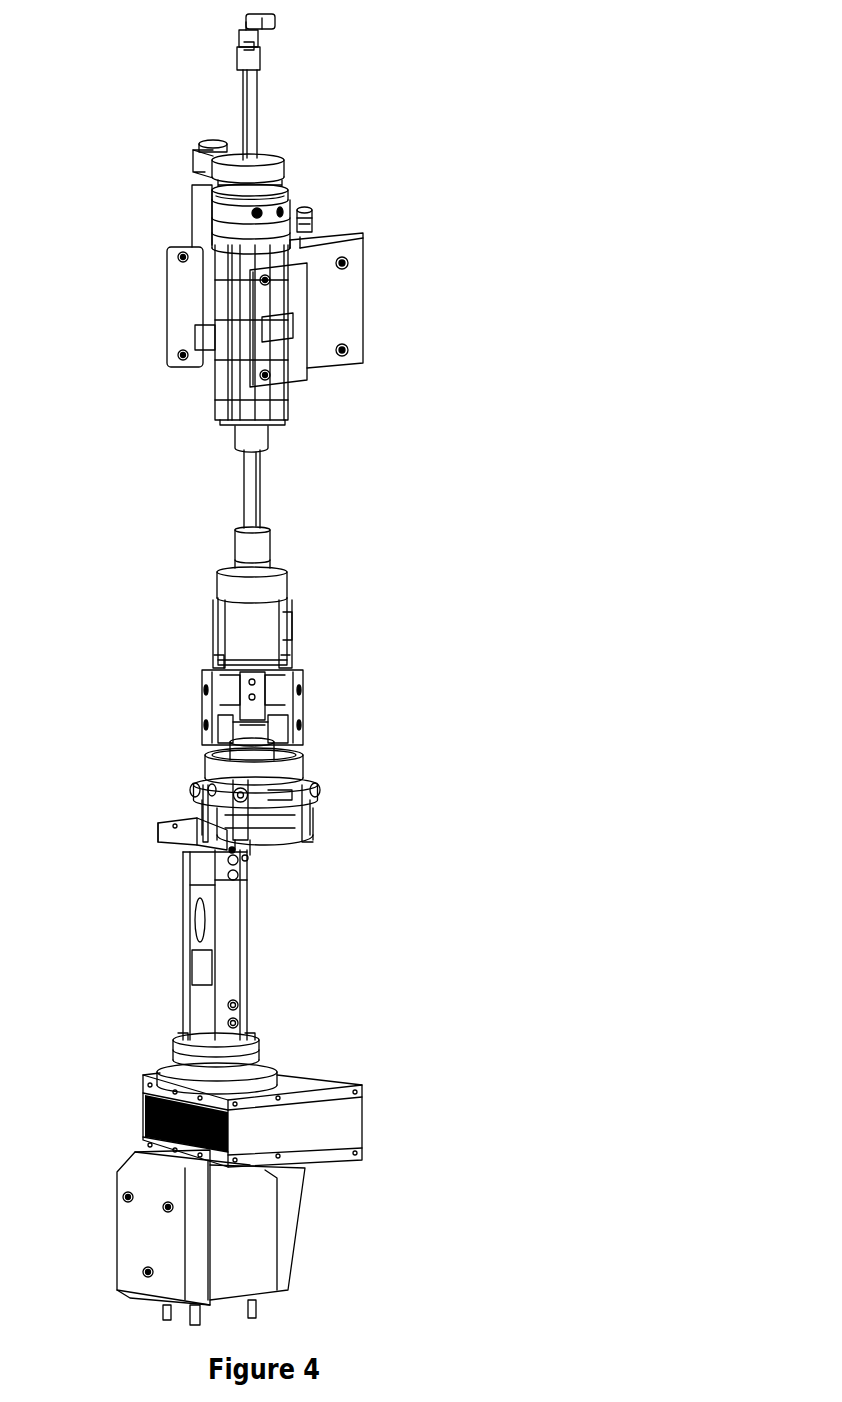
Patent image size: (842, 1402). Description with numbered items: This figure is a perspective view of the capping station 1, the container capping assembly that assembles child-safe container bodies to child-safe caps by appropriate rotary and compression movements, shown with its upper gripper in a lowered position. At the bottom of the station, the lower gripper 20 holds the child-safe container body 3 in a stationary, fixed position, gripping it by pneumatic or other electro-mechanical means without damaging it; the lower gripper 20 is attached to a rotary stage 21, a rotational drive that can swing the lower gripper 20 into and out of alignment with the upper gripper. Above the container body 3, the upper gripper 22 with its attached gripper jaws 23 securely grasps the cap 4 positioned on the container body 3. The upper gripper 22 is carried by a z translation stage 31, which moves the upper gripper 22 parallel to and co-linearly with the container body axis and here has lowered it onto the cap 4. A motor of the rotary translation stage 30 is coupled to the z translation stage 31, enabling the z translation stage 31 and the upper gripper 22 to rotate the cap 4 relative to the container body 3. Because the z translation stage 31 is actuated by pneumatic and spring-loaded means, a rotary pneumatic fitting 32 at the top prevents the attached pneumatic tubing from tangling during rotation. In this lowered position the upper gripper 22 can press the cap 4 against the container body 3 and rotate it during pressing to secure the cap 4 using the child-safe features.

The capping station 1 is at (463, 160).
The container body 3 is at (255, 752).
The cap 4 is at (250, 723).
The lower gripper 20 is at (305, 767).
The rotary stage 21 is at (300, 1075).
The upper gripper 22 is at (260, 637).
The gripper jaws 23 is at (287, 690).
The rotary translation stage 30 is at (200, 215).
The z translation stage 31 is at (214, 297).
The rotary pneumatic fitting 32 is at (238, 56).